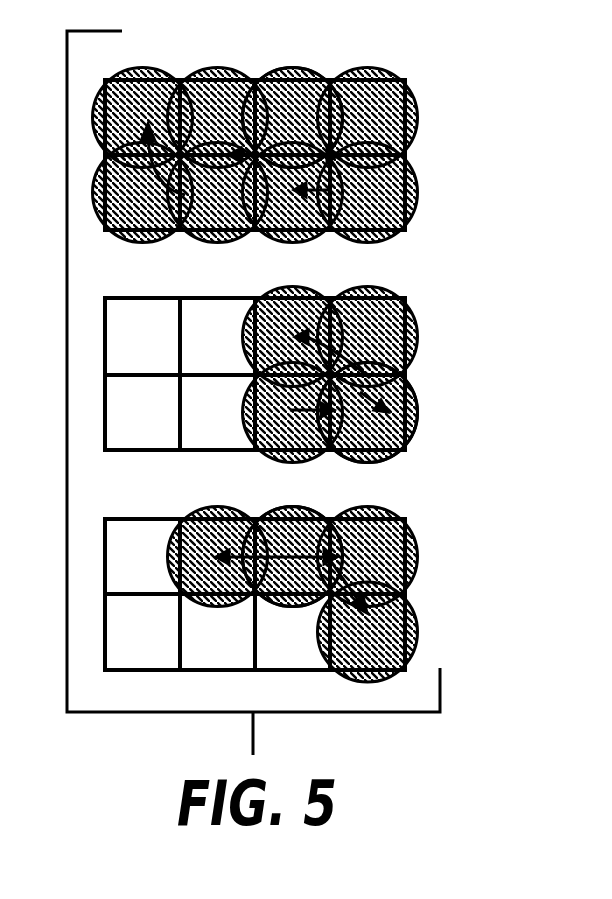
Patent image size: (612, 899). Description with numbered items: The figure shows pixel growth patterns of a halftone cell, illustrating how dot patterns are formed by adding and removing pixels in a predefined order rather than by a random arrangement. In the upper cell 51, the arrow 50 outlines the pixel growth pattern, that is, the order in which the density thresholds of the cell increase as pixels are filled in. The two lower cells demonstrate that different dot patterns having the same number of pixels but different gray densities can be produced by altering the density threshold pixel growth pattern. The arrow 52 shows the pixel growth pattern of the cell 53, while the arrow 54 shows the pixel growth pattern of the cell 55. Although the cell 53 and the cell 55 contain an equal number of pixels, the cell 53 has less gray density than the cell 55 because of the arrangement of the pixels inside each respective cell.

The arrow 50 is at (279, 68).
The cell 51 is at (442, 160).
The arrow 52 is at (372, 420).
The cell 53 is at (442, 377).
The arrow 54 is at (303, 512).
The cell 55 is at (442, 600).